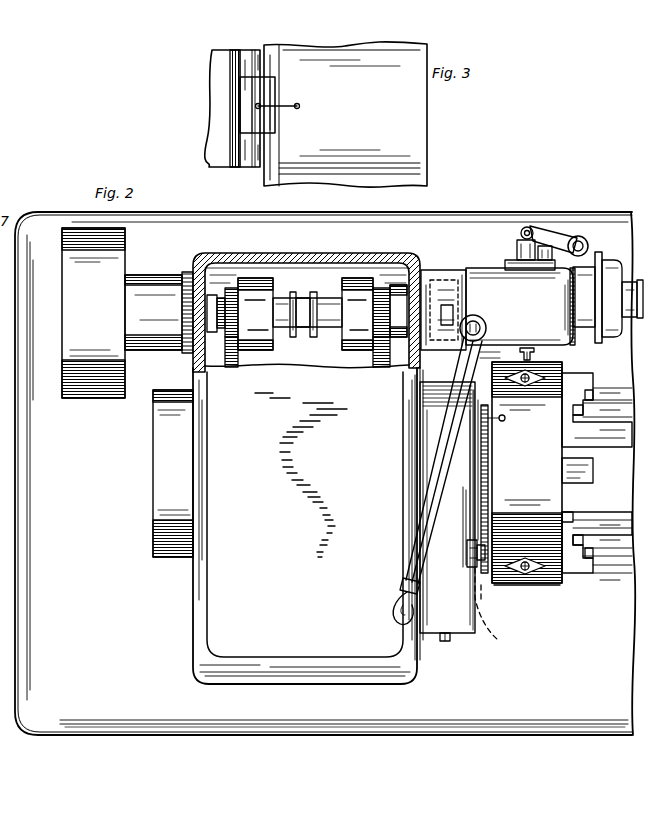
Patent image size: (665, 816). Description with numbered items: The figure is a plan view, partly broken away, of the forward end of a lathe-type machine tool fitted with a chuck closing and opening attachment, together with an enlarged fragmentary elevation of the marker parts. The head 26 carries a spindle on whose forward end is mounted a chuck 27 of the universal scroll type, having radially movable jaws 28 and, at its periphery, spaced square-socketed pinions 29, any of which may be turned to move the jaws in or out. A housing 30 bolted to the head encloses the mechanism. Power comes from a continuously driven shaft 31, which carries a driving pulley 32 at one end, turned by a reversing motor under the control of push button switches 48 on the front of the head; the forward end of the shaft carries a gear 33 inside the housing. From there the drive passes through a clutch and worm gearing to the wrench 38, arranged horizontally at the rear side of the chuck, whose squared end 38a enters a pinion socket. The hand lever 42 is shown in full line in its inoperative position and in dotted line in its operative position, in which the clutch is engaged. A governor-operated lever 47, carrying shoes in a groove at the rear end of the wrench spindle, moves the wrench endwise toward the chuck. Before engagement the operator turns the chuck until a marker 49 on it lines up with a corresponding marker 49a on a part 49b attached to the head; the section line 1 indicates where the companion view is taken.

In FIG. 2, the section line 1- 1 is at (636, 182).
In FIG. 3, the head 26 is at (222, 152).
In FIG. 2, the head 26 is at (217, 578).
In FIG. 3, the chuck 27 is at (417, 143).
In FIG. 2, the chuck 27 is at (548, 584).
In FIG. 2, the jaws 28 is at (605, 494).
In FIG. 2, the pinions 29 is at (526, 583).
In FIG. 2, the housing 30 is at (583, 337).
In FIG. 2, the shaft 31 is at (290, 300).
In FIG. 2, the driving pulley 32 is at (95, 398).
In FIG. 2, the gear 33 is at (460, 290).
In FIG. 2, the wrench 38 is at (514, 252).
In FIG. 2, the squared end 38a is at (534, 356).
In FIG. 2, the hand lever 42 is at (420, 548).
In FIG. 2, the lever 47 is at (548, 244).
In FIG. 2, the push button switches 48 is at (445, 641).
In FIG. 3, the marker 49 is at (297, 104).
In FIG. 3, the marker 49a is at (268, 106).
In FIG. 2, the part 49b is at (467, 556).